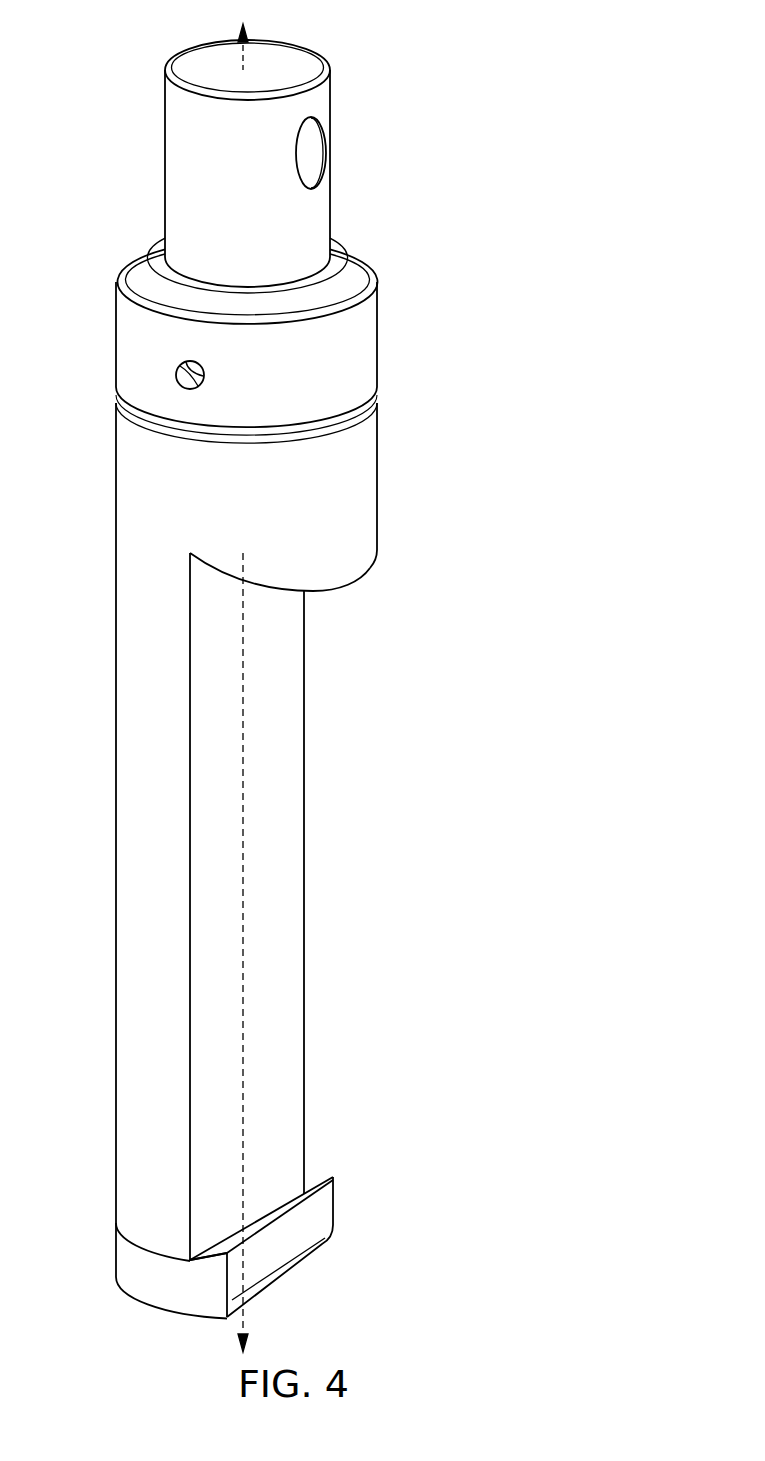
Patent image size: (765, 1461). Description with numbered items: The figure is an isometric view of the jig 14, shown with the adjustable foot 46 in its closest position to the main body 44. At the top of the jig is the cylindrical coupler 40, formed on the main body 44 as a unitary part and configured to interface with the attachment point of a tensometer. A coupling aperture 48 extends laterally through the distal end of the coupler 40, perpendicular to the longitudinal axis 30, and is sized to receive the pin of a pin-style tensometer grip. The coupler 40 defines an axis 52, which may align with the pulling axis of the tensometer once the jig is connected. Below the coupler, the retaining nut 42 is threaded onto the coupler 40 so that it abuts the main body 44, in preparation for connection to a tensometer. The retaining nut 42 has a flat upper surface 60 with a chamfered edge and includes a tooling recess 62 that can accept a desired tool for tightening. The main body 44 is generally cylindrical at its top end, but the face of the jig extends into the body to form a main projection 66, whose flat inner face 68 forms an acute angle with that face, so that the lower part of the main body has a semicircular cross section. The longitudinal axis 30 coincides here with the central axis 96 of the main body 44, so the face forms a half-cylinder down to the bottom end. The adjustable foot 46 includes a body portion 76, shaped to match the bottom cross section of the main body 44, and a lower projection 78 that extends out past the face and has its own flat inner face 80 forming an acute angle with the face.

The jig 14 is at (497, 162).
The longitudinal axis 30 is at (243, 803).
The coupler 40 is at (190, 140).
The retaining nut 42 is at (358, 343).
The main body 44 is at (135, 533).
The adjustable foot 46 is at (308, 1228).
The coupling aperture 48 is at (310, 152).
The axis 52 is at (240, 56).
The upper surface 60 is at (367, 267).
The tooling recess 62 is at (178, 370).
The main projection 66 is at (360, 563).
The flat inner face 68 is at (333, 592).
The body portion 76 is at (148, 1292).
The lower projection 78 is at (312, 1212).
The flat inner face 80 is at (224, 1242).
The central axis 96 is at (240, 663).